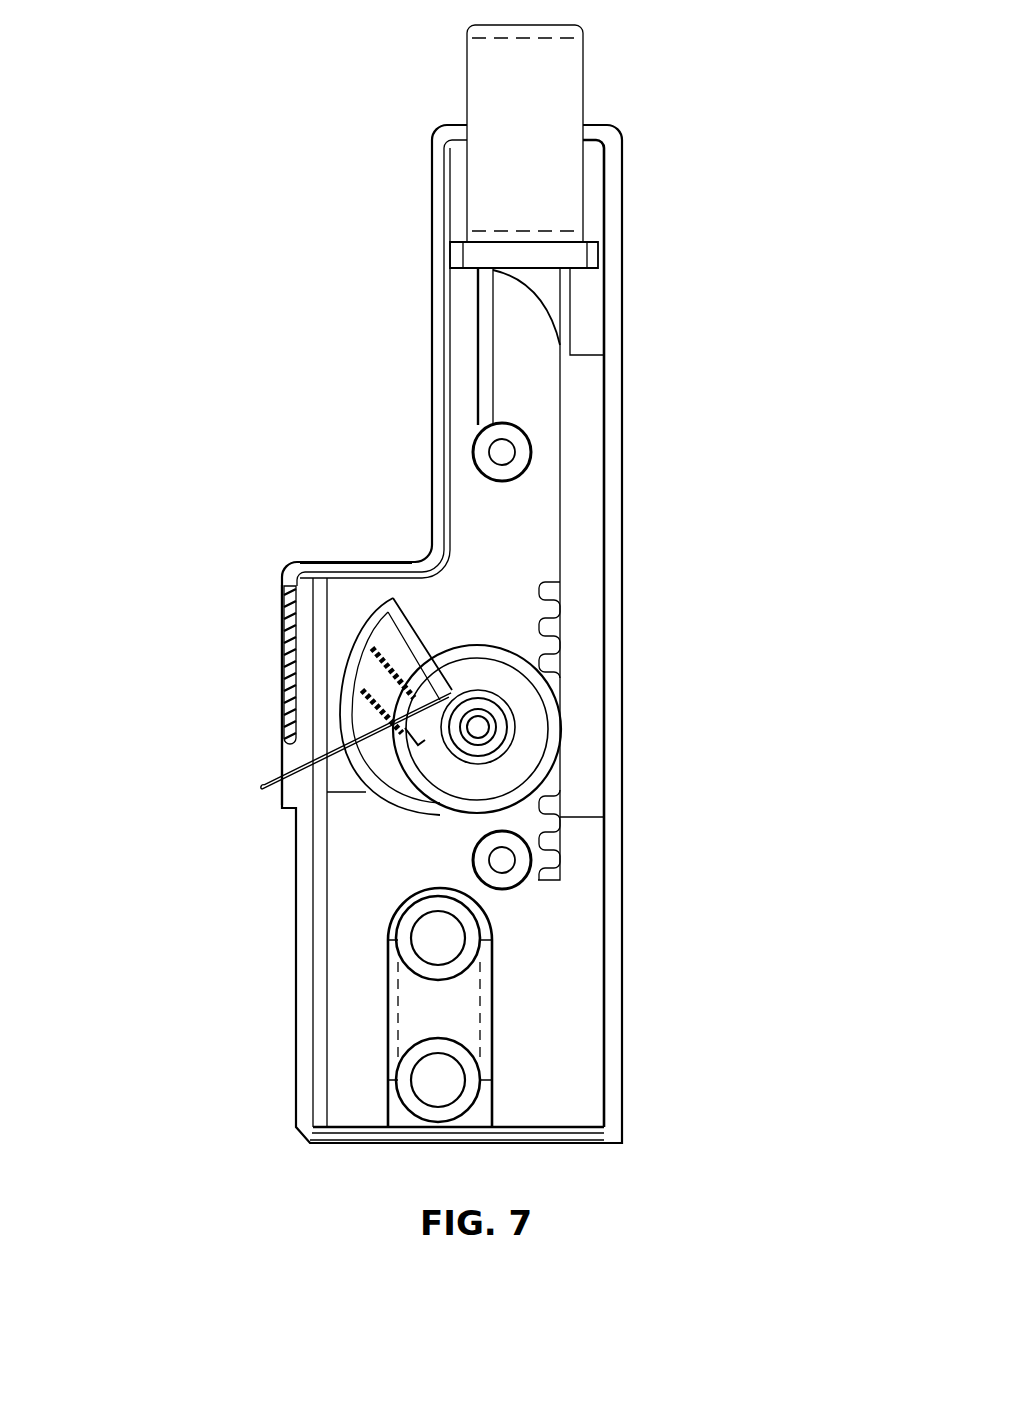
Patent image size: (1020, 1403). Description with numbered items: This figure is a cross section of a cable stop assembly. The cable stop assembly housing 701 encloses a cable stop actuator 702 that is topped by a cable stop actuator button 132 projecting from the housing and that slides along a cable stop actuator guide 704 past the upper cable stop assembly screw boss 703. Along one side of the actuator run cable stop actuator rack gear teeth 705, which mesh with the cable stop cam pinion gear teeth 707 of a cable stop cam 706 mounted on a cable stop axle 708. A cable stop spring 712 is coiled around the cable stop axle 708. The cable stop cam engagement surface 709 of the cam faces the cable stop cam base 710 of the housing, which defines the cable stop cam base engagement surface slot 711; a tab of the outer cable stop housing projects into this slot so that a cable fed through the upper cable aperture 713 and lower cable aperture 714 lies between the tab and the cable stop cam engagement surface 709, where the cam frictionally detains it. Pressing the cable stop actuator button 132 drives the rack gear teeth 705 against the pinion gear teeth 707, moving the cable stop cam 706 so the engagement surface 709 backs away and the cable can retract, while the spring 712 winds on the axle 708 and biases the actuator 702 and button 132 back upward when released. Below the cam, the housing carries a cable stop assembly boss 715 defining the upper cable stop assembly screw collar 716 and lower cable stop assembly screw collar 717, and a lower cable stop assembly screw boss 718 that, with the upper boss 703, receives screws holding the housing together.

The cable stop actuator button 132 is at (583, 74).
The cable stop assembly housing 701 is at (610, 1086).
The cable stop actuator 702 is at (591, 450).
The upper cable stop assembly screw boss 703 is at (473, 462).
The cable stop actuator guide 704 is at (477, 360).
The cable stop actuator rack gear teeth 705 is at (560, 610).
The cable stop cam 706 is at (440, 777).
The cable stop cam pinion gear teeth 707 is at (558, 712).
The cable stop axle 708 is at (490, 722).
The cable stop cam engagement surface 709 is at (355, 692).
The cable stop cam base 710 is at (293, 740).
The cable stop cam base engagement surface slot 711 is at (280, 598).
The cable stop spring 712 is at (272, 792).
The upper cable aperture 713 is at (313, 562).
The lower cable aperture 714 is at (357, 1131).
The cable stop assembly boss 715 is at (498, 993).
The upper cable stop assembly screw collar 716 is at (398, 942).
The lower cable stop assembly screw collar 717 is at (398, 1087).
The lower cable stop assembly screw boss 718 is at (542, 858).